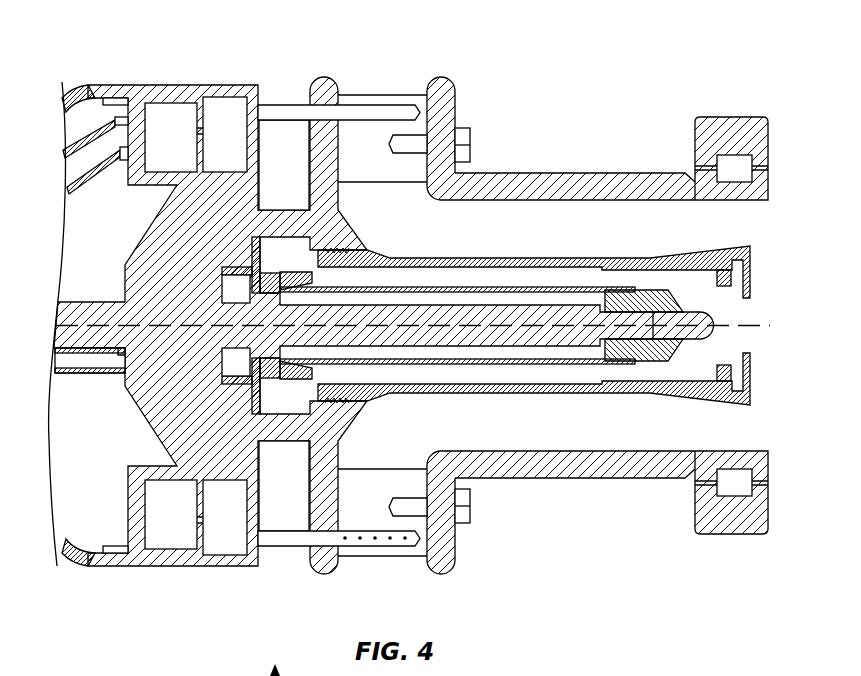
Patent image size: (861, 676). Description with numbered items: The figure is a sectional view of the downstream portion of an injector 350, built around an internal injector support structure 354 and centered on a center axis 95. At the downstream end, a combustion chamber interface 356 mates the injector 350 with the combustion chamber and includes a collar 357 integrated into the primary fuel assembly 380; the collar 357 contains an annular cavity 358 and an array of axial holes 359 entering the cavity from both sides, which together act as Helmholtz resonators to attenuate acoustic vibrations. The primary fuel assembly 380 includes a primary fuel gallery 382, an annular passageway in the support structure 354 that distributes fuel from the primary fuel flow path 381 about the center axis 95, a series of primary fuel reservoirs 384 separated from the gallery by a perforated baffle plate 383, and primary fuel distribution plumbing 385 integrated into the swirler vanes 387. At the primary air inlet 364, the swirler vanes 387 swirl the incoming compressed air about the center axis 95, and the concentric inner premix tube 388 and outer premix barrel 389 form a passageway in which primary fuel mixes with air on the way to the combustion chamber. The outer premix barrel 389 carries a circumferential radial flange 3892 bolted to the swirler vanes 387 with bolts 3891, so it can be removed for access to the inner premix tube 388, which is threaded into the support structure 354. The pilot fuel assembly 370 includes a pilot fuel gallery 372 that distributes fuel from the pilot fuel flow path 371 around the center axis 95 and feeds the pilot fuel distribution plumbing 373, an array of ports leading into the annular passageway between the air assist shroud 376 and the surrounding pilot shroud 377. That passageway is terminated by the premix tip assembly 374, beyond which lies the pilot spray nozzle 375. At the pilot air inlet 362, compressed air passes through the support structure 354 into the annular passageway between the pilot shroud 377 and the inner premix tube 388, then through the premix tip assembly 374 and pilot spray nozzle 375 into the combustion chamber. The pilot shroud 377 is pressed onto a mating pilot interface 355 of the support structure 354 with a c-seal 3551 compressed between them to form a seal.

The injector 350 is at (83, 42).
The internal injector support structure 354 is at (137, 259).
The mating pilot interface 355 is at (250, 283).
The c-seal 3551 is at (267, 282).
The combustion chamber interface 356 is at (752, 101).
The collar 357 is at (750, 536).
The annular cavity 358 is at (742, 178).
The axial holes 359 is at (700, 167).
The pilot air inlet 362 is at (285, 564).
The primary air inlet 364 is at (386, 565).
The pilot fuel assembly 370 is at (458, 249).
The pilot fuel flow path 371 is at (88, 363).
The pilot fuel gallery 372 is at (233, 364).
The pilot fuel distribution plumbing 373 is at (332, 403).
The premix tip assembly 374 is at (610, 346).
The pilot spray nozzle 375 is at (732, 345).
The air assist shroud 376 is at (470, 366).
The pilot shroud 377 is at (524, 366).
The primary fuel assembly 380 is at (585, 123).
The primary fuel flow path 381 is at (95, 142).
The primary fuel gallery 382 is at (157, 110).
The perforated baffle plate 383 is at (200, 100).
The primary fuel reservoirs 384 is at (222, 107).
The primary fuel distribution plumbing 385 is at (282, 108).
The swirler vanes 387 is at (395, 170).
The inner premix tube 388 is at (553, 394).
The outer premix barrel 389 is at (556, 478).
The bolts 3891 is at (464, 150).
The circumferential radial flange 3892 is at (452, 104).
The center axis 95 is at (757, 325).